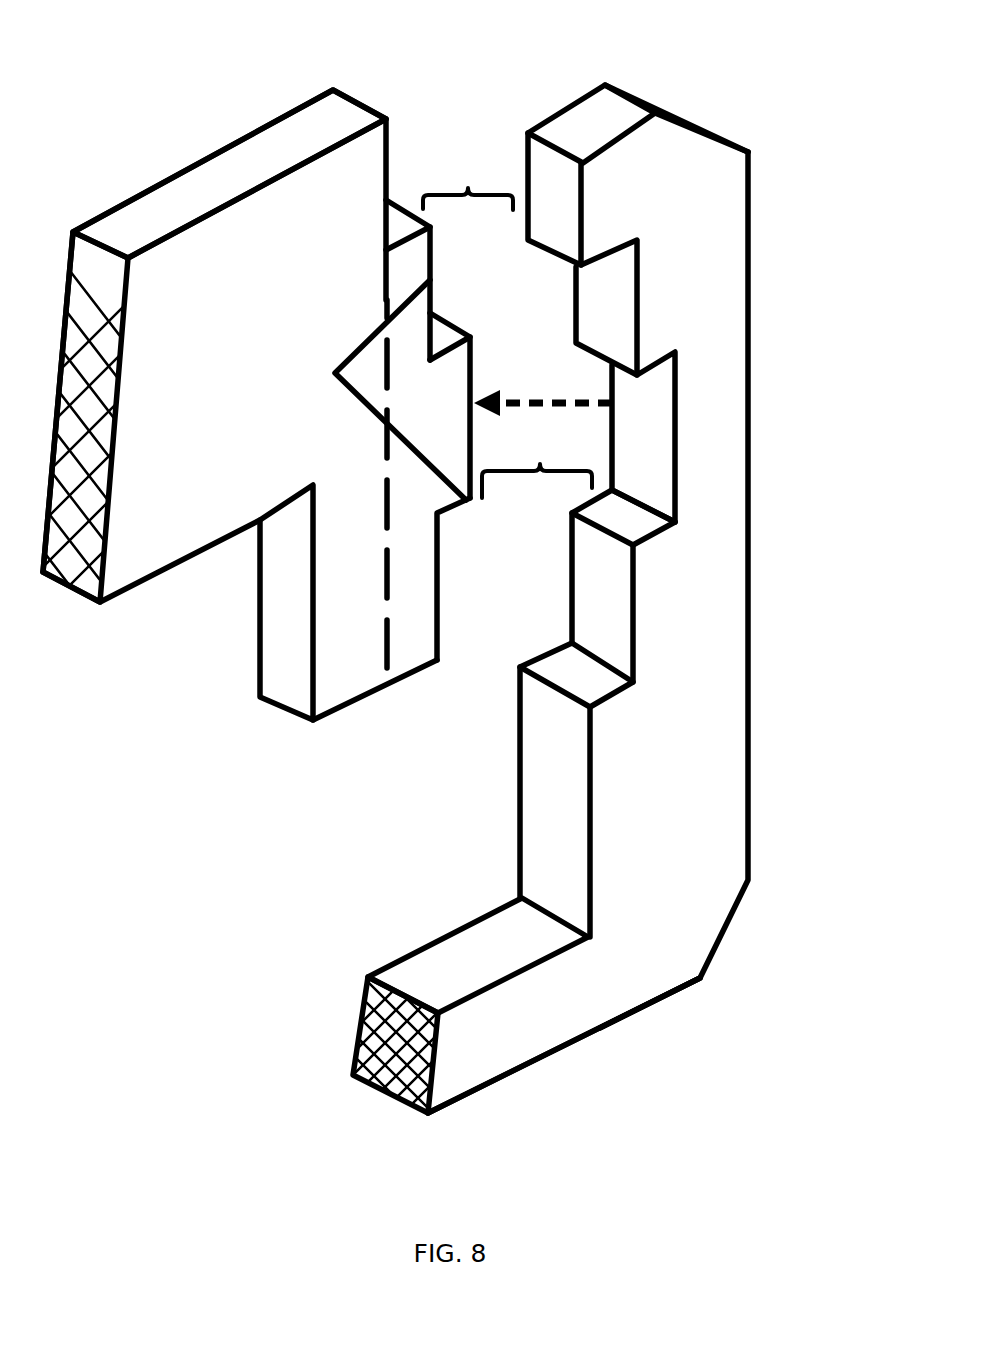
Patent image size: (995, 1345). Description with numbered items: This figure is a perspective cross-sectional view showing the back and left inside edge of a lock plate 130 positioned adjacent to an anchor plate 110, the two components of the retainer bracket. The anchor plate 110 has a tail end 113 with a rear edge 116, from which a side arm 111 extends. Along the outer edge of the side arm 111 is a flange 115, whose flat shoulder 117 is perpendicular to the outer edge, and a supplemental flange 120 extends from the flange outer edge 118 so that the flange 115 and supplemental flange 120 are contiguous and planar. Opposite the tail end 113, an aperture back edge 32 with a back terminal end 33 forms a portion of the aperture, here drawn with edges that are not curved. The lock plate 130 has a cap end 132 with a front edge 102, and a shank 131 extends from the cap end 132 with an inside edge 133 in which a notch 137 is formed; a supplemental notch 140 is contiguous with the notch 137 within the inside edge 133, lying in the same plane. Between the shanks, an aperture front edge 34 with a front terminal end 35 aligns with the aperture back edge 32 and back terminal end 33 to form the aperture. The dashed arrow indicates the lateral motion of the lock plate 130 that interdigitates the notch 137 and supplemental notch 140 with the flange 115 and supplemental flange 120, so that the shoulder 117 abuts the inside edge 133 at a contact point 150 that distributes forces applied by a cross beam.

The anchor plate 110 is at (177, 133).
The tail end 113 is at (177, 272).
The rear edge 116 is at (270, 152).
The shoulder 117 is at (393, 223).
The flange 115 is at (412, 210).
The contact point 150 is at (517, 322).
The supplemental flange 120 is at (455, 385).
The flange outer edge 118 is at (437, 630).
The side arm 111 is at (360, 620).
The aperture back edge 32 is at (203, 550).
The back terminal end 33 is at (280, 700).
The lock plate 130 is at (751, 108).
The inside edge 133 is at (610, 297).
The shank 131 is at (715, 298).
The supplemental notch 140 is at (661, 443).
The notch 137 is at (623, 610).
The front terminal end 35 is at (555, 687).
The aperture front edge 34 is at (488, 945).
The front edge 102 is at (600, 1030).
The cap end 132 is at (493, 1032).